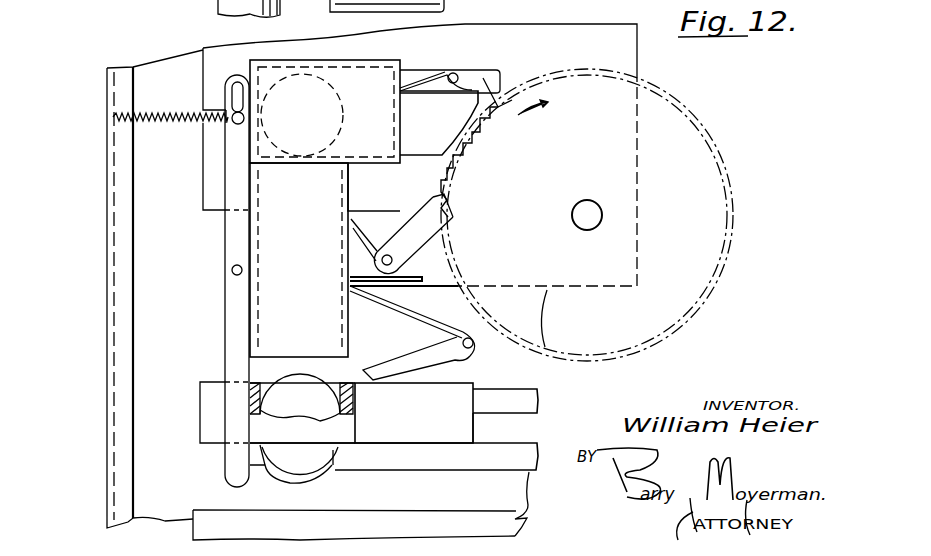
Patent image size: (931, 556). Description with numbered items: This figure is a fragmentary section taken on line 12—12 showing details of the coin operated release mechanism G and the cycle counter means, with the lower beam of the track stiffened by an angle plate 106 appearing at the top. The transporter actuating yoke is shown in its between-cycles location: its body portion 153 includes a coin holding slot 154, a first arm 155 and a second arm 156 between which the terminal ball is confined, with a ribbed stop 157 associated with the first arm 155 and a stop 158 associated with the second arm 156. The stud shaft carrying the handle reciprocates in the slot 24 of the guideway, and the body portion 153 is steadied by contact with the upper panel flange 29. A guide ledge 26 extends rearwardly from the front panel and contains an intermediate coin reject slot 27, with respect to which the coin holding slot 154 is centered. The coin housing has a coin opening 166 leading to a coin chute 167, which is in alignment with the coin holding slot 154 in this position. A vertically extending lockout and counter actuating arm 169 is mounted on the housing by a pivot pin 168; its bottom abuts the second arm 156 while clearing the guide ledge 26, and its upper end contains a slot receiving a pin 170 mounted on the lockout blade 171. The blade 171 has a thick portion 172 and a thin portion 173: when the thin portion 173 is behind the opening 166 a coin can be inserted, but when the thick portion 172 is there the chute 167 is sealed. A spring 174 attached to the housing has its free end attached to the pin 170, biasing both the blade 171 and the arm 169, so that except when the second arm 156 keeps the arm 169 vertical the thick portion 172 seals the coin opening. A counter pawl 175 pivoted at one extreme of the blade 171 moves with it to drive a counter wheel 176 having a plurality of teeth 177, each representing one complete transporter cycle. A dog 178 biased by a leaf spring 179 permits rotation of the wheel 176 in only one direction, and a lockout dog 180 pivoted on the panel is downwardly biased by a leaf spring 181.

The section line 12— 12 is at (303, 3).
The angle plate 106 is at (358, 12).
The thin portion 173 is at (287, 67).
The lockout and counter actuating arm 169 is at (230, 345).
The coin operated release mechanism G is at (237, 305).
The pin 170 is at (233, 119).
The spring 174 is at (179, 99).
The pivot pin 168 is at (232, 270).
The coin opening 166 is at (325, 111).
The coin chute 167 is at (299, 260).
The lockout blade 171 is at (437, 65).
The thick portion 172 is at (411, 143).
The counter pawl 175 is at (497, 78).
The teeth 177 is at (455, 170).
The counter wheel 176 is at (718, 198).
The leaf spring 179 is at (355, 221).
The dog 178 is at (413, 238).
The leaf spring 181 is at (408, 295).
The lockout dog 180 is at (420, 352).
The first arm 155 is at (347, 380).
The stop 158 is at (200, 393).
The coin holding slot 154 is at (317, 392).
The second arm 156 is at (297, 392).
The guide ledge 26 is at (263, 470).
The coin reject slot 27 is at (327, 470).
The ribbed stop 157 is at (467, 412).
The upper panel flange 29 is at (527, 402).
The slot 24 is at (523, 432).
The body portion 153 is at (428, 432).